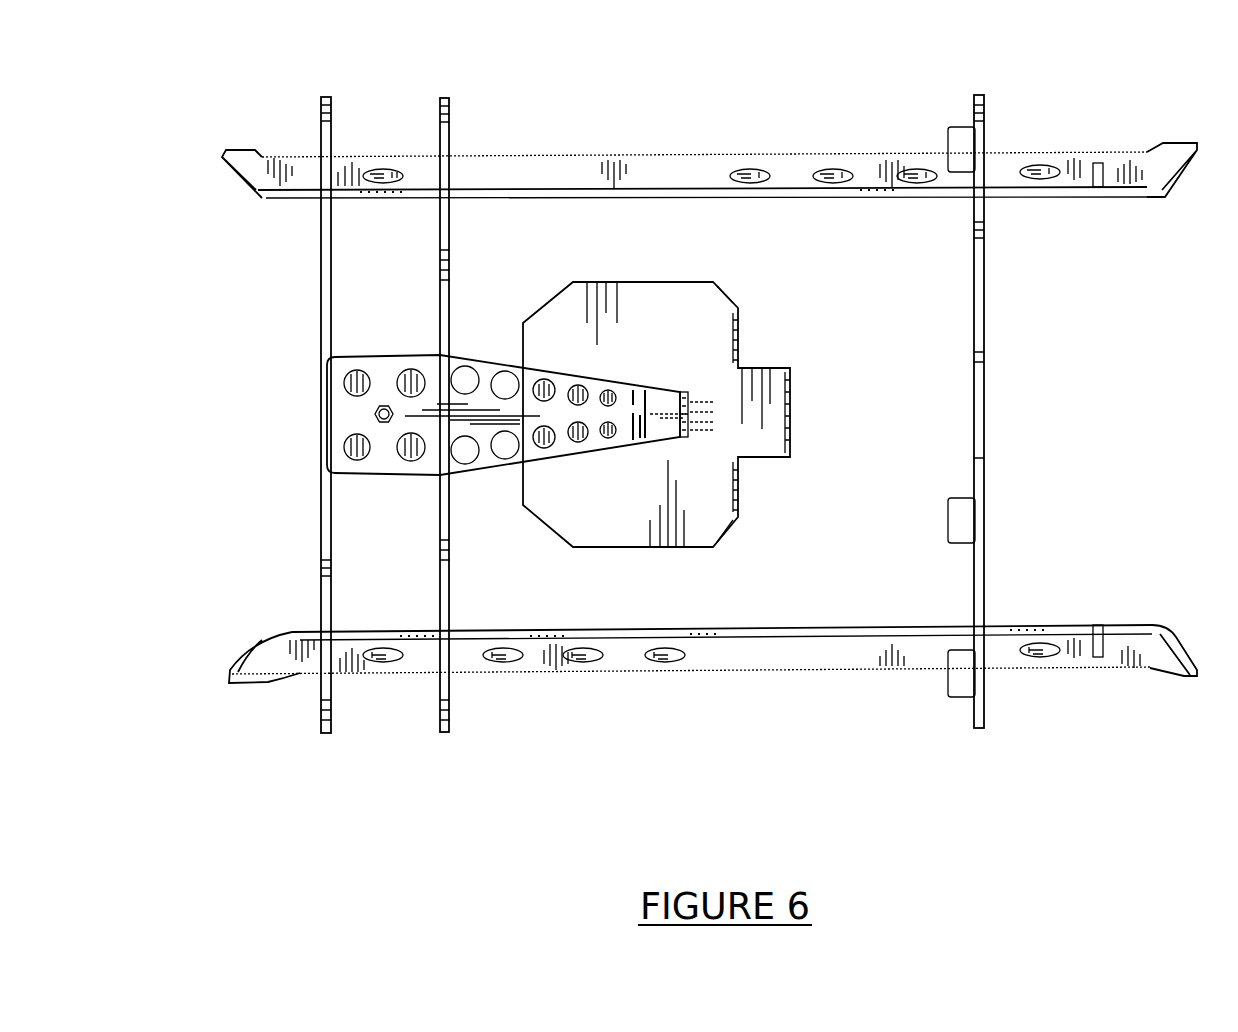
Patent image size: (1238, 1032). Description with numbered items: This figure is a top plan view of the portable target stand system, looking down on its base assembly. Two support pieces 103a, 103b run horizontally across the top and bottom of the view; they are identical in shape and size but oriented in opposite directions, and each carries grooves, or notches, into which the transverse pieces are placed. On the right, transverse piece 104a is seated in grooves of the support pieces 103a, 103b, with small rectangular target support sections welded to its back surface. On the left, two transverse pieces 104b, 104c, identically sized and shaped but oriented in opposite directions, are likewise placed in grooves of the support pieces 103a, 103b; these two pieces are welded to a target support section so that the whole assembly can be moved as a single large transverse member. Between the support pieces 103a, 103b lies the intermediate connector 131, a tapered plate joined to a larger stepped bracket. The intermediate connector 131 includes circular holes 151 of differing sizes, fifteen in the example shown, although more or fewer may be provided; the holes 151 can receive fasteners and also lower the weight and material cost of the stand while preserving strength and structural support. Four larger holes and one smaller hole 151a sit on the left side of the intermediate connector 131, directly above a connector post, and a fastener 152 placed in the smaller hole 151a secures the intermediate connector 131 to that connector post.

The support piece 103a is at (822, 628).
The support piece 103b is at (572, 150).
The transverse piece 104a is at (975, 400).
The transverse piece 104b is at (440, 298).
The transverse piece 104c is at (318, 288).
The intermediate connector 131 is at (375, 360).
The circular holes 151 is at (468, 452).
The smaller hole 151a is at (375, 411).
The fastener 152 is at (378, 421).